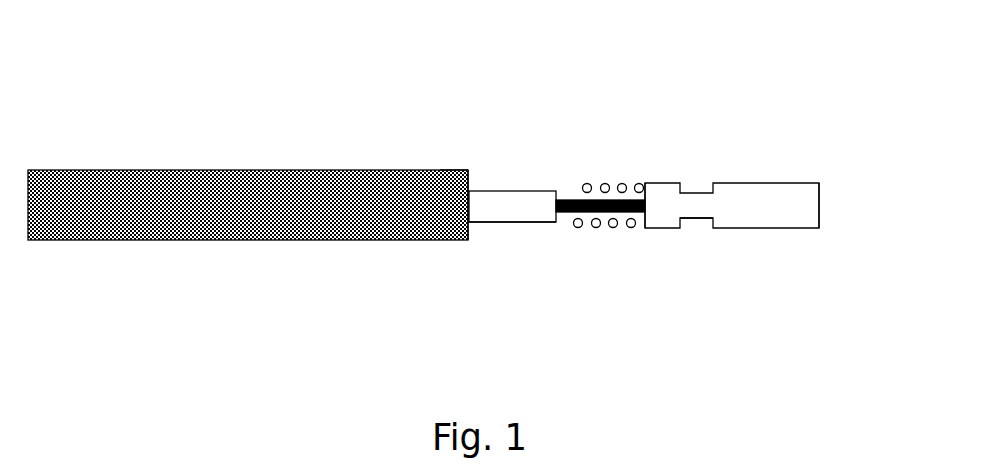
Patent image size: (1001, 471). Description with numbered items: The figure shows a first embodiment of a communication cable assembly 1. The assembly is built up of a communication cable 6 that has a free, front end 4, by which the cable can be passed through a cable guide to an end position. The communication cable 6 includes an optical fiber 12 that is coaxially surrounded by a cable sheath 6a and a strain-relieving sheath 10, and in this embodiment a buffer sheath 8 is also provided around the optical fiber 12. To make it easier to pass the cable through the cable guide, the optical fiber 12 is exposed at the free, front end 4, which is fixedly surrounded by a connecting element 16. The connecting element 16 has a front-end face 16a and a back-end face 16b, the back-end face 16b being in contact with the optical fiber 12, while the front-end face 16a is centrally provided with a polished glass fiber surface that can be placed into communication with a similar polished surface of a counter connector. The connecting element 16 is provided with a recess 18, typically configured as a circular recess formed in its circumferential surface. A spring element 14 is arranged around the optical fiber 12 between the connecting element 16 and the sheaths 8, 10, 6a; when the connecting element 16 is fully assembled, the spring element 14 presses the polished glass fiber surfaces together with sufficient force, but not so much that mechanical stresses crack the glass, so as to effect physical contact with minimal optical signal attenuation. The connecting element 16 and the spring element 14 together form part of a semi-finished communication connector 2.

The communication cable assembly 1 is at (480, 170).
The semi-finished communication connector 2 is at (837, 205).
The free, front end 4 is at (450, 155).
The communication cable 6 is at (82, 203).
The cable sheath 6a is at (335, 170).
The buffer sheath 8 is at (538, 203).
The strain-relieving sheath 10 is at (538, 232).
The optical fiber 12 is at (563, 200).
The spring element 14 is at (613, 223).
The connecting element 16 is at (767, 205).
The front-end face 16a is at (805, 198).
The back-end face 16b is at (648, 192).
The recess 18 is at (697, 222).